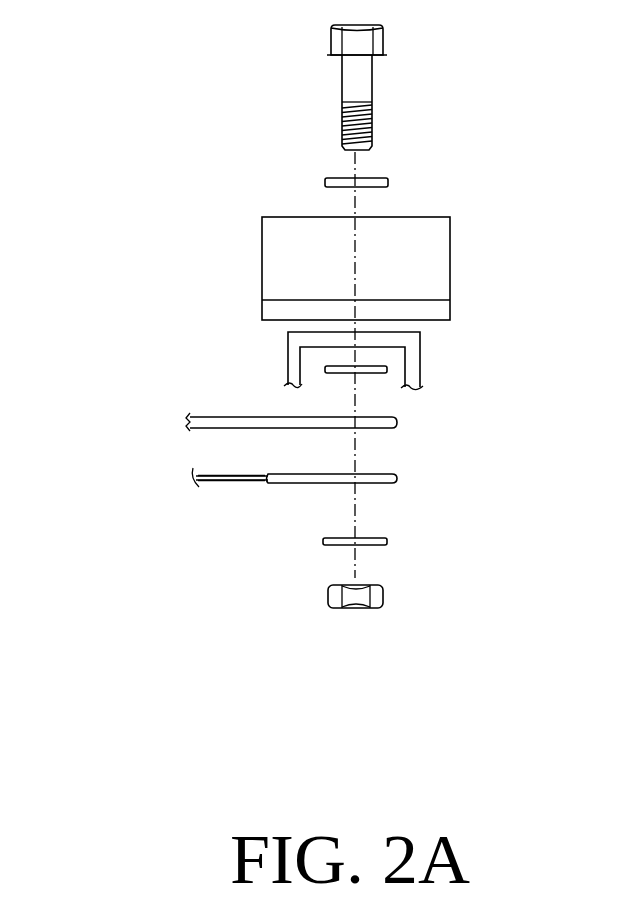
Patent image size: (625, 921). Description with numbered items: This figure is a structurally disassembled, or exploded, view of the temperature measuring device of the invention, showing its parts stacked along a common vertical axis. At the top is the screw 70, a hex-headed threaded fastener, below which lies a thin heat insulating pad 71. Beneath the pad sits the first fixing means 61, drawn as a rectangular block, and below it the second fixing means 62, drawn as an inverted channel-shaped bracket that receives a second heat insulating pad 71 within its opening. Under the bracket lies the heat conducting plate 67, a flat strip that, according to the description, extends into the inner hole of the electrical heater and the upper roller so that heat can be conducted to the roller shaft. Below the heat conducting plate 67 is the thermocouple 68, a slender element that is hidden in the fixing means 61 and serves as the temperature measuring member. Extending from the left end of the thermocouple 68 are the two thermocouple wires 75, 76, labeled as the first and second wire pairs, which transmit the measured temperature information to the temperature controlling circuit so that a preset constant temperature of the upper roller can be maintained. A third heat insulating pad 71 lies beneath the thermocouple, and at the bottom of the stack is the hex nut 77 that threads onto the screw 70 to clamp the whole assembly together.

The screw 70 is at (362, 77).
The heat insulating pad 71 is at (372, 181).
The fixing means 61 is at (420, 266).
The fixing means 62 is at (292, 353).
The heat conducting plate 67 is at (395, 424).
The thermocouple 68 is at (396, 480).
The thermocouple wire 75 is at (236, 477).
The thermocouple wire 76 is at (222, 482).
The nut 77 is at (380, 598).